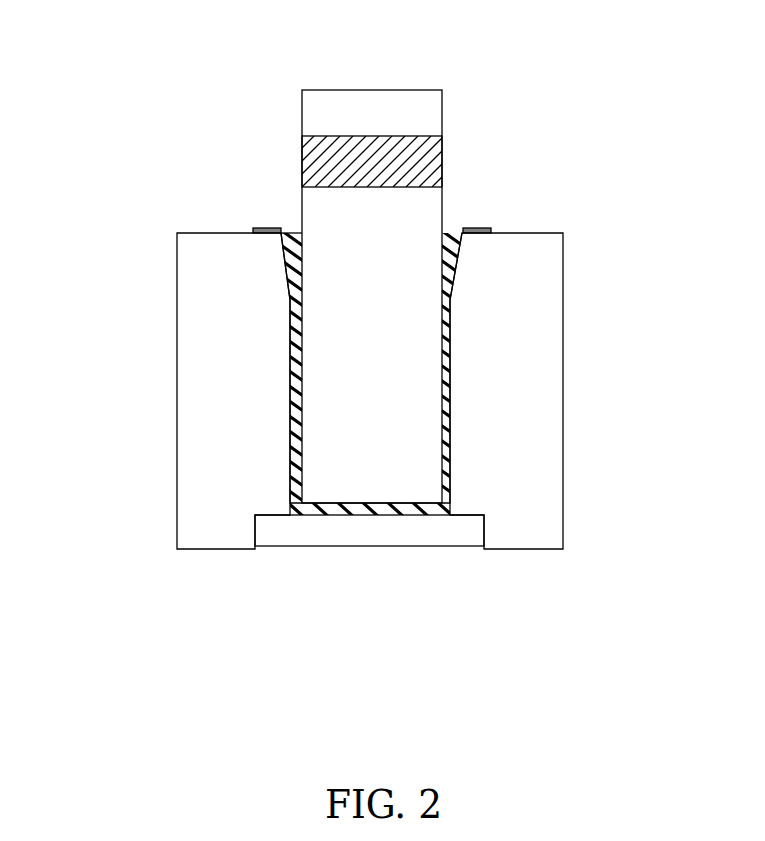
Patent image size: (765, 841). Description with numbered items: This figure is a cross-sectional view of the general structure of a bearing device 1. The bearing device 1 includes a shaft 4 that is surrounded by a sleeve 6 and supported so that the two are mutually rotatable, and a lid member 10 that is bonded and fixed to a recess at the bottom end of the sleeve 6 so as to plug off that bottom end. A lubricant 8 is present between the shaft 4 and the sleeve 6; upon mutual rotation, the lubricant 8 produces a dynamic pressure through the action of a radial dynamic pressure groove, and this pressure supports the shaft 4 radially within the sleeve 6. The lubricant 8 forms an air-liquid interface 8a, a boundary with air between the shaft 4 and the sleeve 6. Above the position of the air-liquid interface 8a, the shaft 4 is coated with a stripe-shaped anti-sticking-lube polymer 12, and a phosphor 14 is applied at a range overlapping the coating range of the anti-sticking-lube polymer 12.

The bearing device 1 is at (537, 630).
The shaft 4 is at (382, 485).
The sleeve 6 is at (197, 432).
The lubricant 8 is at (290, 307).
The air-liquid interface 8a is at (295, 235).
The lid member 10 is at (277, 537).
The anti-sticking-lube polymer 12 is at (278, 229).
The phosphor 14 is at (262, 229).